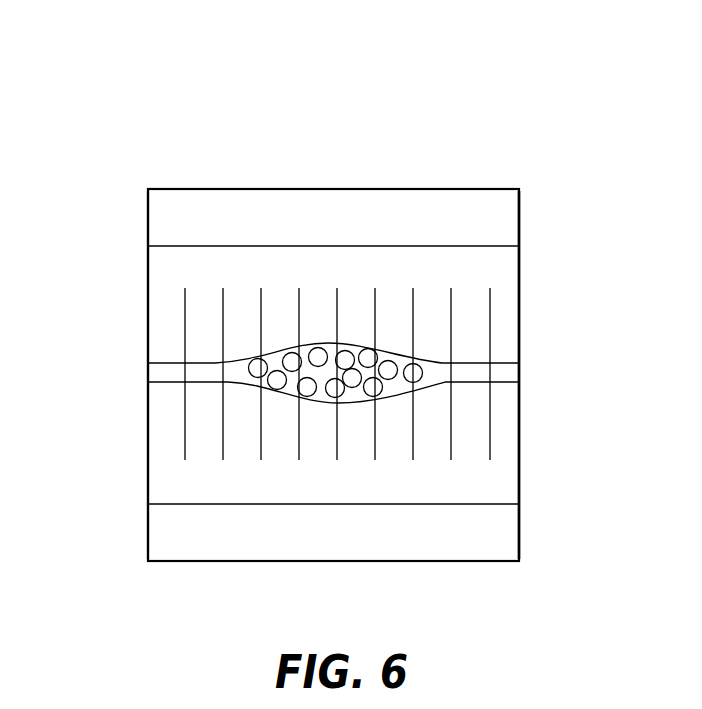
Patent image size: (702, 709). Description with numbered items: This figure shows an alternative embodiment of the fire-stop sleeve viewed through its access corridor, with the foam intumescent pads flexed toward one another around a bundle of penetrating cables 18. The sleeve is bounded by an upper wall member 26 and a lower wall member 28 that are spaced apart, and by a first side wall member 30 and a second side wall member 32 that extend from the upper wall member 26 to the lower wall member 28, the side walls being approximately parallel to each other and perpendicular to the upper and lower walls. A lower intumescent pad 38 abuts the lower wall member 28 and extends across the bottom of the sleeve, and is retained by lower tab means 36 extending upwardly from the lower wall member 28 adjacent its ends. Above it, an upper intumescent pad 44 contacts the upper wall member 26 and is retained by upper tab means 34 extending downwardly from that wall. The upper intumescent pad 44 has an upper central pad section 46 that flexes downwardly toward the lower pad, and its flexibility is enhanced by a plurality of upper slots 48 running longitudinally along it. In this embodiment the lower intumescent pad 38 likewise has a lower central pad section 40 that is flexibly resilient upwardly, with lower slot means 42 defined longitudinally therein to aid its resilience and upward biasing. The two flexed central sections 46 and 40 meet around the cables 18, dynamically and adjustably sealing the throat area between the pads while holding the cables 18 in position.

The penetrating cables 18 is at (307, 387).
The upper wall member 26 is at (241, 189).
The lower wall member 28 is at (296, 563).
The first side wall member 30 is at (147, 321).
The second side wall member 32 is at (519, 333).
The upper tab means 34 is at (345, 232).
The lower tab means 36 is at (346, 549).
The lower intumescent pad 38 is at (165, 480).
The lower central pad section 40 is at (241, 484).
The lower slot means 42 is at (412, 447).
The upper intumescent pad 44 is at (168, 263).
The upper central pad section 46 is at (360, 263).
The upper slots 48 is at (378, 300).